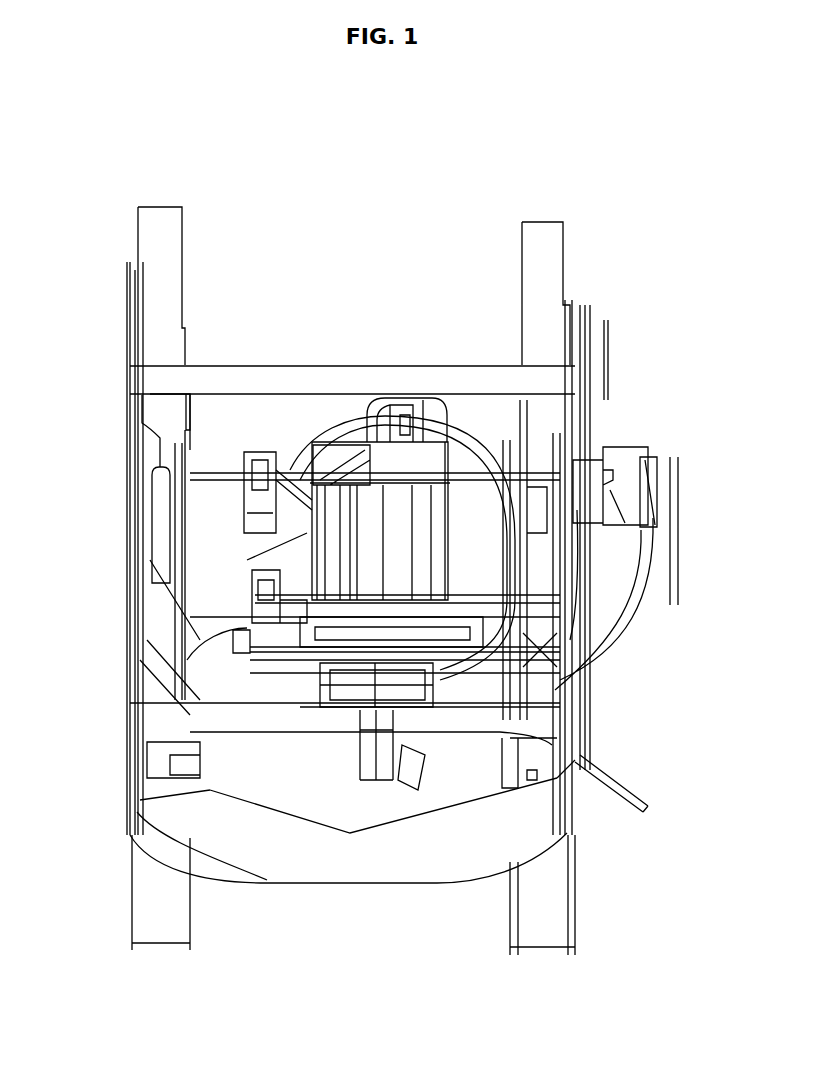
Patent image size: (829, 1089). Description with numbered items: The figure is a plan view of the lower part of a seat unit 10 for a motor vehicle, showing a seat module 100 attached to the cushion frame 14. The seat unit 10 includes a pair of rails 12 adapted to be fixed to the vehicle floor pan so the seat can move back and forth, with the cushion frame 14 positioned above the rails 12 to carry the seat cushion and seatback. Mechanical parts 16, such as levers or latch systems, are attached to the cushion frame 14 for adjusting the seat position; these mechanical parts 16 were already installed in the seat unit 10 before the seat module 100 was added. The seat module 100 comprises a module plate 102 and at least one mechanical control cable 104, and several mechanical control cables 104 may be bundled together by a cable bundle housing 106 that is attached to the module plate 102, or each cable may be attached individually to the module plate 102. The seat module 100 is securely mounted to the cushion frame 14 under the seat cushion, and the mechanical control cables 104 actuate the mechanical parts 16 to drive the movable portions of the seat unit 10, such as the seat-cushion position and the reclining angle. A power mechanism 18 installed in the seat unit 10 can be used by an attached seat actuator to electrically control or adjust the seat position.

The seat unit 10 is at (500, 190).
The rails 12 is at (157, 683).
The cushion frame 14 is at (253, 913).
The mechanical parts 16 is at (610, 347).
The power mechanism 18 is at (503, 457).
The seat module 100 is at (293, 440).
The module plate 102 is at (357, 522).
The mechanical control cable 104 is at (350, 435).
The cable bundle housing 106 is at (300, 698).